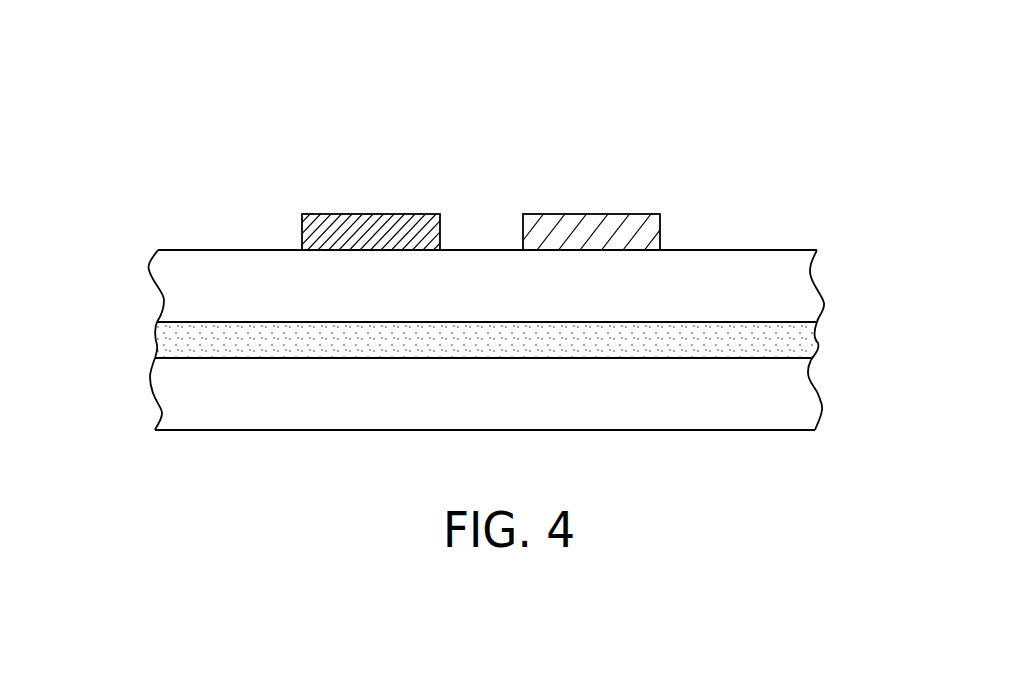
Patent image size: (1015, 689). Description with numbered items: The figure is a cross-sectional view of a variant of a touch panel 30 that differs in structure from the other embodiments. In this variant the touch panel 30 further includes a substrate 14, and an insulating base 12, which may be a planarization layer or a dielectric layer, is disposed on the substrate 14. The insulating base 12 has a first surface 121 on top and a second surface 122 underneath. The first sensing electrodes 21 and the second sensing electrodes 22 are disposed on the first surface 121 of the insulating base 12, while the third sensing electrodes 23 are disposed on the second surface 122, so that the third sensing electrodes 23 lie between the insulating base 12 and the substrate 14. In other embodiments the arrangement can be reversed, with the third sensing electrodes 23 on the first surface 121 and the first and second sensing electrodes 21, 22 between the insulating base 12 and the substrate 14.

The touch panel 30 is at (922, 120).
The insulating base 12 is at (815, 278).
The first surface 121 is at (778, 250).
The second surface 122 is at (803, 323).
The first sensing electrodes 21 is at (387, 213).
The second sensing electrodes 22 is at (588, 213).
The third sensing electrodes 23 is at (168, 345).
The substrate 14 is at (173, 397).